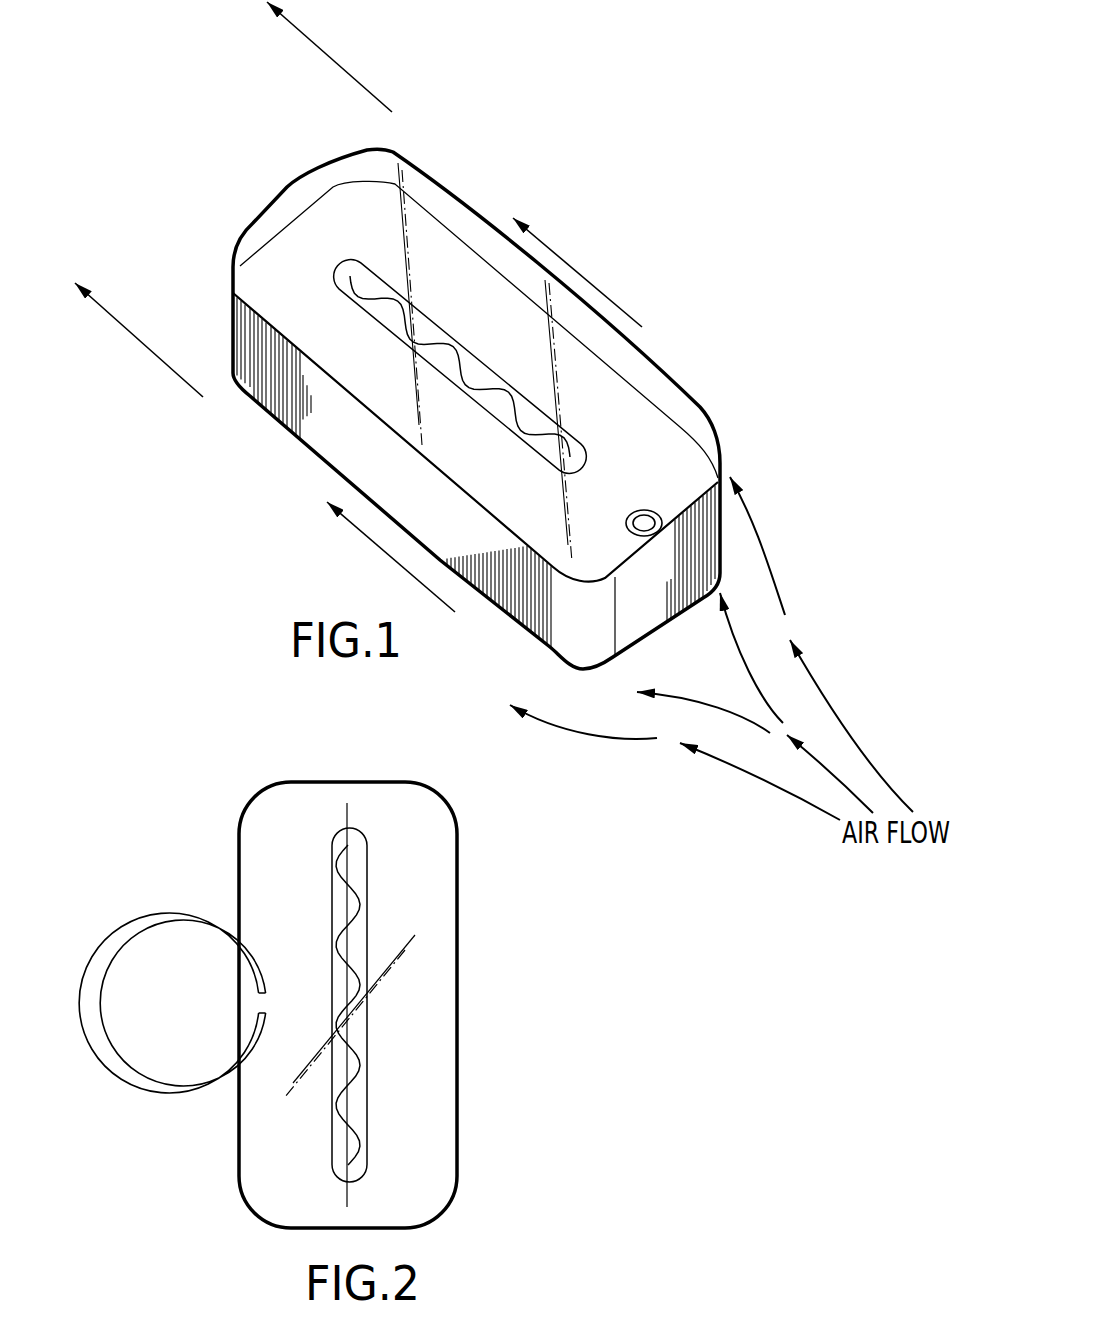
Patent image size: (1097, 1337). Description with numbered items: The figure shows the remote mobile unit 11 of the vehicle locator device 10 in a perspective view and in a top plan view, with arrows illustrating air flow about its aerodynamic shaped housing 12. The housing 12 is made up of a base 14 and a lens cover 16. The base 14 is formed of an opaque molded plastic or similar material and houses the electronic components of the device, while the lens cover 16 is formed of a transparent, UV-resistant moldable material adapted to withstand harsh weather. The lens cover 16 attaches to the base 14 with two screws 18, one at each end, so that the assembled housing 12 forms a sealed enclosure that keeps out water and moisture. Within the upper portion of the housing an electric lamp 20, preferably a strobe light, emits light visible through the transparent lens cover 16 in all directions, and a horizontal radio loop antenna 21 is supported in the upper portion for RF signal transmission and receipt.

In FIG. 1, the vehicle locator device 10 is at (553, 365).
In FIG. 1, the remote mobile unit 11 is at (720, 450).
In FIG. 2, the remote mobile unit 11 is at (458, 892).
In FIG. 1, the housing 12 is at (703, 403).
In FIG. 1, the base 14 is at (335, 438).
In FIG. 1, the lens cover 16 is at (465, 227).
In FIG. 1, the screws 18 is at (645, 520).
In FIG. 1, the electric lamp 20 is at (458, 350).
In FIG. 2, the electric lamp 20 is at (367, 1125).
In FIG. 2, the horizontal radio loop antenna 21 is at (437, 993).